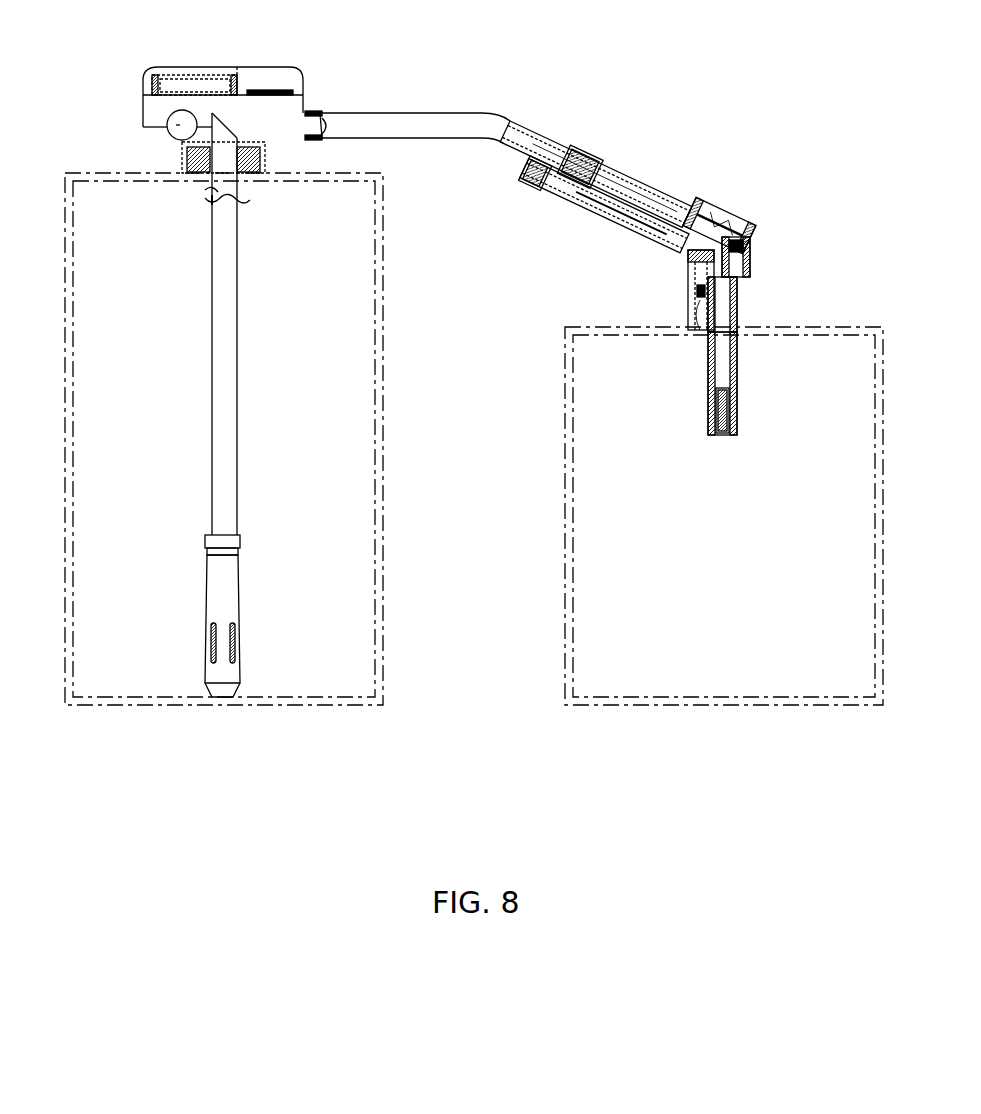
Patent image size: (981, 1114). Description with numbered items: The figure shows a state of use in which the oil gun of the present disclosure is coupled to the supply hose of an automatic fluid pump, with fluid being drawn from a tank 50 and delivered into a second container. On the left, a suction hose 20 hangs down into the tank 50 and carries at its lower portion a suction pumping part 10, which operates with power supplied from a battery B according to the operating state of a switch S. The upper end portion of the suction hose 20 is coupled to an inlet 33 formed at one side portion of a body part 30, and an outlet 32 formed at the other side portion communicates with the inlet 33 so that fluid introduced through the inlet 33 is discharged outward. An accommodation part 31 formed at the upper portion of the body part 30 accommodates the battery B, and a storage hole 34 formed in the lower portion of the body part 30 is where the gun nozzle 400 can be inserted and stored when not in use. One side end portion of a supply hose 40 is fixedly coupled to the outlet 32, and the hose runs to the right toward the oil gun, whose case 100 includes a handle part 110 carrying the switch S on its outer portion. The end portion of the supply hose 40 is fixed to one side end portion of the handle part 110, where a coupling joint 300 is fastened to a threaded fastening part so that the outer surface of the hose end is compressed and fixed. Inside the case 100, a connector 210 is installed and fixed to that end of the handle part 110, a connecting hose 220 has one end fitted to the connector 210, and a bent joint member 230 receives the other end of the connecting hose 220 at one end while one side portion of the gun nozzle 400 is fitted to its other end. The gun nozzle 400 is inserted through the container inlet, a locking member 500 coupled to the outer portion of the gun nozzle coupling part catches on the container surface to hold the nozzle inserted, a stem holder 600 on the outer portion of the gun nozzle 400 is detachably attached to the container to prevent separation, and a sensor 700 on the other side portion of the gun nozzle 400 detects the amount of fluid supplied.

The suction pumping part 10 is at (232, 607).
The suction hose 20 is at (232, 336).
The body part 30 is at (266, 70).
The accommodation part 31 is at (152, 73).
The outlet 32 is at (325, 128).
The inlet 33 is at (210, 198).
The storage hole 34 is at (172, 127).
The supply hose 40 is at (464, 112).
The tank 50 is at (162, 703).
The case 100 is at (675, 140).
The handle part 110 is at (630, 235).
The connector 210 is at (556, 146).
The connecting hose 220 is at (612, 222).
The joint member 230 is at (687, 257).
The coupling joint 300 is at (586, 160).
The gun nozzle 400 is at (712, 378).
The locking member 500 is at (754, 273).
The stem holder 600 is at (740, 318).
The sensor 700 is at (710, 410).
The battery B is at (186, 85).
The switch S is at (714, 200).